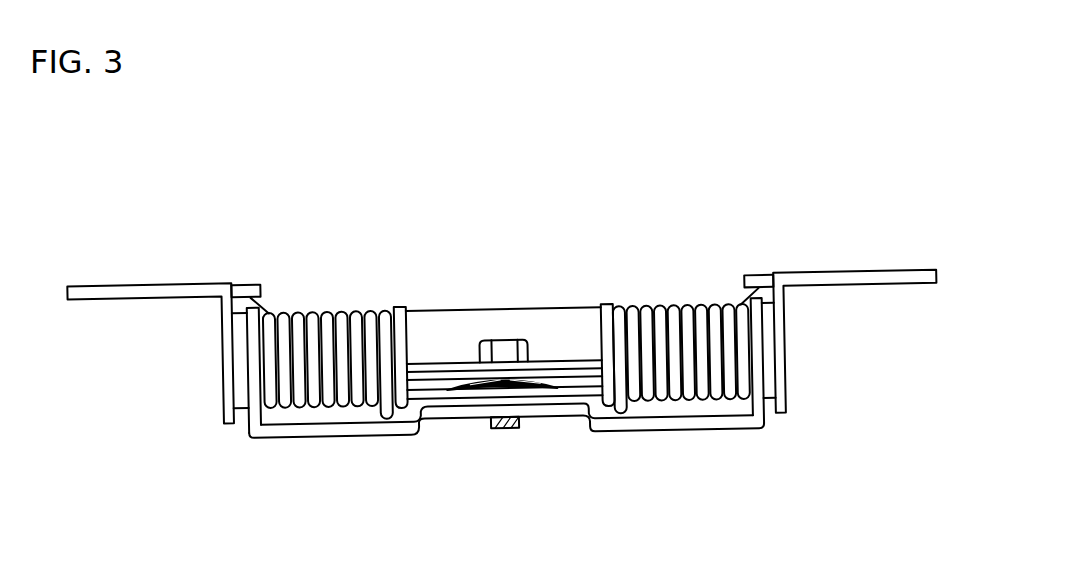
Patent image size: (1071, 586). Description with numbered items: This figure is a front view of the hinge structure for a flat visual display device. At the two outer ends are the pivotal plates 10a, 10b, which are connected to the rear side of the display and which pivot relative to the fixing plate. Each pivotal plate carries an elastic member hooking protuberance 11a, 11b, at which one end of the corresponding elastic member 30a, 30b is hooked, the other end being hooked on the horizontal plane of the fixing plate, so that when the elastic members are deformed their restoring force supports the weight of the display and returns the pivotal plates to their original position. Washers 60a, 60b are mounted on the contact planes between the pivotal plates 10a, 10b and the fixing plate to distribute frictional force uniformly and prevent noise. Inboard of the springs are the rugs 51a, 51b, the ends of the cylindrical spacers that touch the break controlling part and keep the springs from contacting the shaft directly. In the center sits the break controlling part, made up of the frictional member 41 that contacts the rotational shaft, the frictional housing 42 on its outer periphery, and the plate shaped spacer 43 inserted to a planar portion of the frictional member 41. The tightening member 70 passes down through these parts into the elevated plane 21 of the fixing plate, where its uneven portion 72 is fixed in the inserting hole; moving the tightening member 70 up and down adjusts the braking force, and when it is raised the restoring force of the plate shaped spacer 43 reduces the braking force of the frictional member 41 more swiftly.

The pivotal plate 10a is at (125, 286).
The pivotal plate 10b is at (848, 285).
The elastic member hooking protuberance 11a is at (255, 280).
The elastic member hooking protuberance 11b is at (762, 283).
The elevated plane 21 is at (457, 409).
The elastic member 30a is at (323, 327).
The elastic member 30b is at (678, 328).
The frictional member 41 is at (570, 378).
The frictional housing 42 is at (460, 306).
The plate shaped spacer 43 is at (532, 390).
The rug 51a is at (398, 301).
The rug 51b is at (606, 304).
The washer 60a is at (245, 360).
The washer 60b is at (768, 372).
The tightening member 70 is at (508, 347).
The uneven portion 72 is at (498, 429).